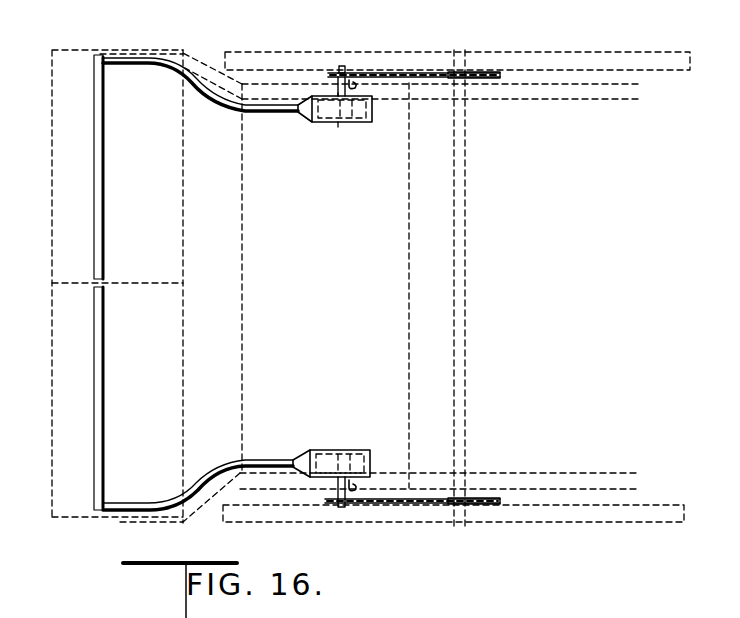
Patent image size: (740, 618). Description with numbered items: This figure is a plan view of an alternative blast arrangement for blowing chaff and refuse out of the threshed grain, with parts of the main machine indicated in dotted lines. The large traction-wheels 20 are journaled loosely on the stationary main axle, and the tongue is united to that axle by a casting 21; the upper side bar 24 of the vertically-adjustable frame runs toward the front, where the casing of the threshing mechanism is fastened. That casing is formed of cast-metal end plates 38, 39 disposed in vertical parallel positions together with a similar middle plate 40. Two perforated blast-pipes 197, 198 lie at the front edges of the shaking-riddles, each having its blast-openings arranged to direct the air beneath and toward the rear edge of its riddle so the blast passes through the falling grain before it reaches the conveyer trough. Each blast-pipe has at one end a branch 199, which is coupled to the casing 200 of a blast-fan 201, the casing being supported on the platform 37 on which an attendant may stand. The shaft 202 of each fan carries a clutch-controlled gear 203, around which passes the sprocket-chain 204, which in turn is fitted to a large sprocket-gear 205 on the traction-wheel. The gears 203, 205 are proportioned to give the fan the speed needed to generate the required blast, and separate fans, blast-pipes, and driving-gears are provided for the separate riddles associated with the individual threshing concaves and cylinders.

The traction-wheel 20 is at (549, 52).
The casting 21 is at (459, 351).
The upper side bar 24 is at (532, 100).
The platform 37 is at (398, 378).
The end plate 38 is at (77, 50).
The end plate 39 is at (73, 523).
The middle plate 40 is at (72, 283).
The perforated blast-pipe 197 is at (104, 410).
The perforated blast-pipe 198 is at (104, 192).
The branch 199 is at (222, 101).
The fan casing 200 is at (358, 123).
The blast-fan 201 is at (318, 123).
The fan shaft 202 is at (340, 123).
The clutch-controlled gear 203 is at (336, 70).
The sprocket-chain 204 is at (392, 70).
The sprocket-gear 205 is at (470, 70).